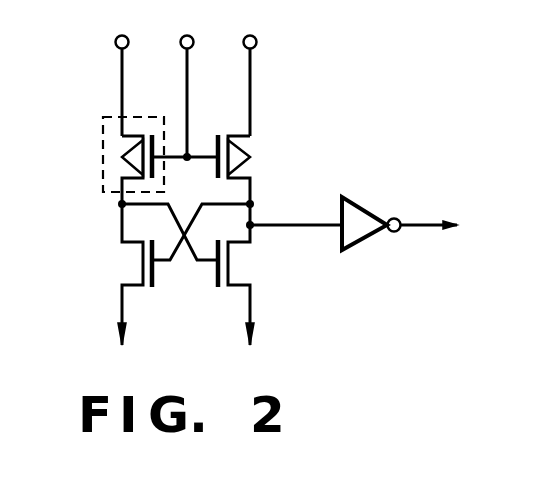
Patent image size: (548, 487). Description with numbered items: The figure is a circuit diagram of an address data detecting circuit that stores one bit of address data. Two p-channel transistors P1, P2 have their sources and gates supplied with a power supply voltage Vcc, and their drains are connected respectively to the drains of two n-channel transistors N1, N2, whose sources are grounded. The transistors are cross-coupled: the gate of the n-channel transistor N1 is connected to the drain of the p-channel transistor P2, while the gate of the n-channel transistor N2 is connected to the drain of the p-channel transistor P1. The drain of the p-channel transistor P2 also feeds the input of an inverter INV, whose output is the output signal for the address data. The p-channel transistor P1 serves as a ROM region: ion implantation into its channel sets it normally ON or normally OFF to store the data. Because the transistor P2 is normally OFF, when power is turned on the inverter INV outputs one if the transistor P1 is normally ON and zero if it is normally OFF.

The power supply voltage Vcc is at (186, 79).
The p-channel transistor P1 is at (142, 135).
The p-channel transistor P2 is at (229, 134).
The ROM region ROM is at (103, 117).
The n-channel transistor N1 is at (122, 260).
The n-channel transistor N2 is at (255, 264).
The inverter INV is at (358, 196).